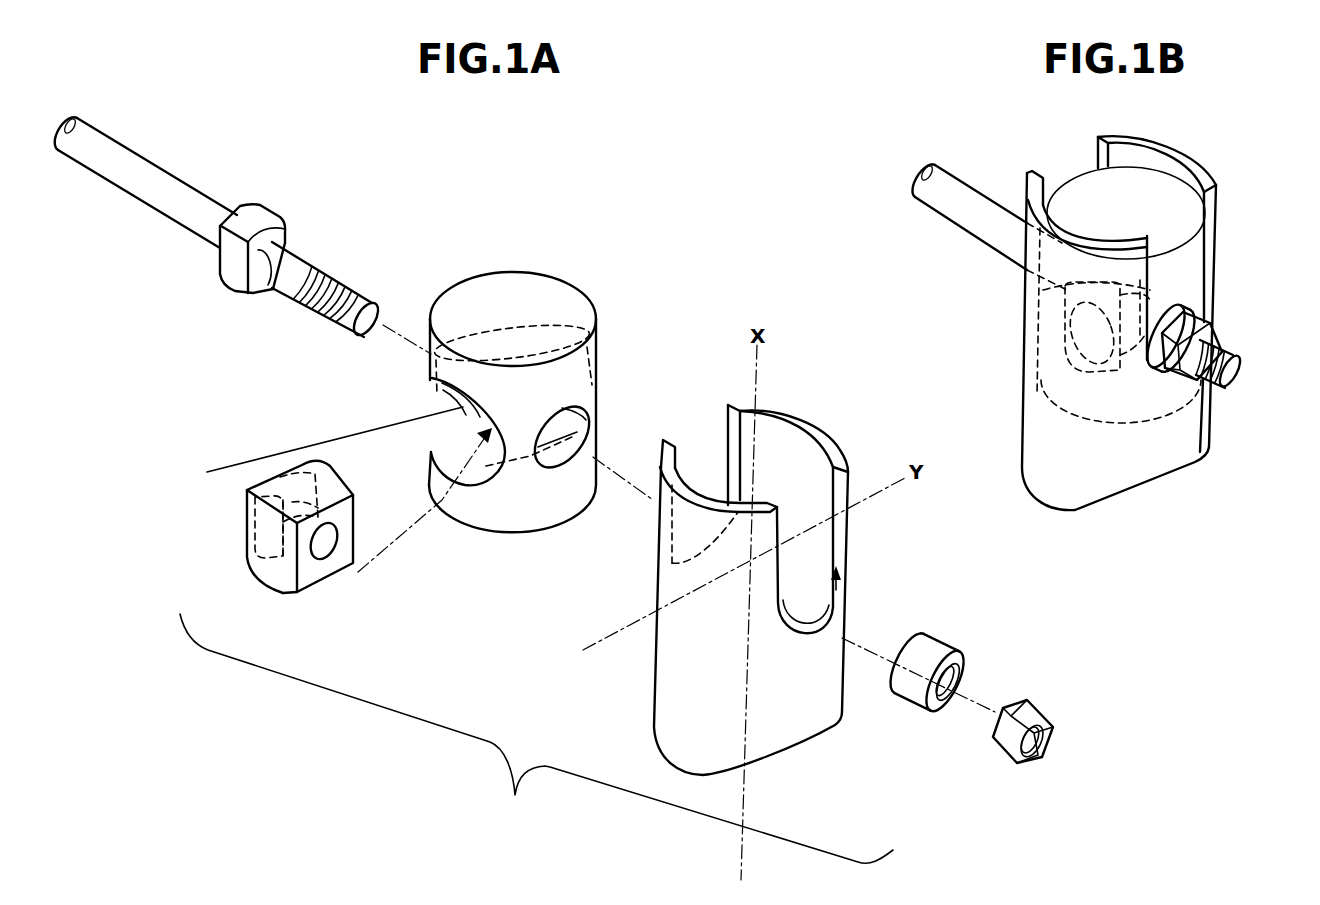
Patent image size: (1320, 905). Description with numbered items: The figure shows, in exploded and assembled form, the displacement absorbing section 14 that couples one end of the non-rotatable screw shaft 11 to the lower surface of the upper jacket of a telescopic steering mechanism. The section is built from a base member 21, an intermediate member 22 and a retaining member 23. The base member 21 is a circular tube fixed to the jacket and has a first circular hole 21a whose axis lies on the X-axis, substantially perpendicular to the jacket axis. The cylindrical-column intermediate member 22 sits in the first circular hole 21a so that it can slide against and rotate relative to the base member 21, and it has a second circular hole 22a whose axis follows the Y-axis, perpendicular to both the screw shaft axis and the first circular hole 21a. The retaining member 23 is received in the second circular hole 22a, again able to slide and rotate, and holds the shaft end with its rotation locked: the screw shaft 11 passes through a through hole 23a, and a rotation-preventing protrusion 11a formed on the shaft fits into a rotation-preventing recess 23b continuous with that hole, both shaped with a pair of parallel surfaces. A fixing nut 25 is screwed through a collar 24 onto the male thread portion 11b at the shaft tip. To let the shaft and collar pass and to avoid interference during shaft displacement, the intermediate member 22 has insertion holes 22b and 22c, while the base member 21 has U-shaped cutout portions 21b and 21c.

In FIG. 1A, the screw shaft 11 is at (142, 189).
In FIG. 1B, the screw shaft 11 is at (968, 215).
In FIG. 1A, the rotation-preventing protrusion 11a is at (233, 270).
In FIG. 1A, the male thread portion 11b is at (330, 323).
In FIG. 1B, the male thread portion 11b is at (1222, 384).
In FIG. 1A, the displacement absorbing section 14 is at (530, 827).
In FIG. 1B, the displacement absorbing section 14 is at (1172, 492).
In FIG. 1A, the base member 21 is at (663, 680).
In FIG. 1B, the base member 21 is at (1102, 492).
In FIG. 1A, the first circular hole 21a is at (793, 462).
In FIG. 1A, the U-shaped cutout portion 21b is at (730, 447).
In FIG. 1A, the U-shaped cutout portion 21c is at (840, 597).
In FIG. 1A, the intermediate member 22 is at (528, 280).
In FIG. 1B, the intermediate member 22 is at (1153, 182).
In FIG. 1A, the second circular hole 22a is at (470, 445).
In FIG. 1A, the insertion hole 22b is at (483, 342).
In FIG. 1A, the insertion hole 22c is at (578, 428).
In FIG. 1A, the retaining member 23 is at (267, 575).
In FIG. 1B, the retaining member 23 is at (1160, 240).
In FIG. 1A, the through hole 23a is at (325, 548).
In FIG. 1A, the rotation-preventing recess 23b is at (253, 525).
In FIG. 1A, the collar 24 is at (945, 631).
In FIG. 1B, the collar 24 is at (1197, 318).
In FIG. 1A, the fixing nut 25 is at (1018, 698).
In FIG. 1B, the fixing nut 25 is at (1217, 335).